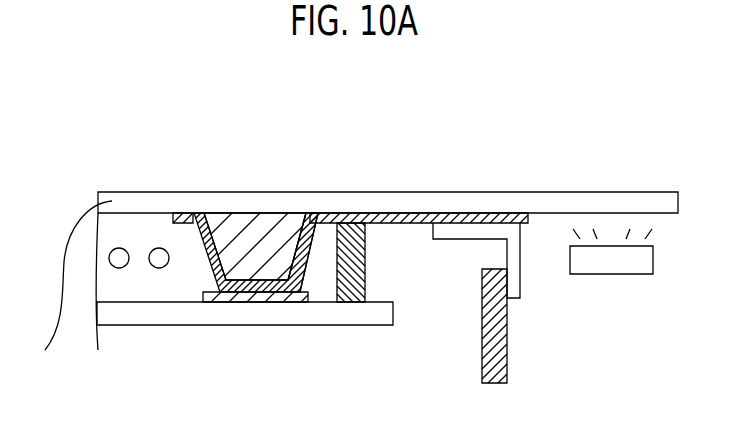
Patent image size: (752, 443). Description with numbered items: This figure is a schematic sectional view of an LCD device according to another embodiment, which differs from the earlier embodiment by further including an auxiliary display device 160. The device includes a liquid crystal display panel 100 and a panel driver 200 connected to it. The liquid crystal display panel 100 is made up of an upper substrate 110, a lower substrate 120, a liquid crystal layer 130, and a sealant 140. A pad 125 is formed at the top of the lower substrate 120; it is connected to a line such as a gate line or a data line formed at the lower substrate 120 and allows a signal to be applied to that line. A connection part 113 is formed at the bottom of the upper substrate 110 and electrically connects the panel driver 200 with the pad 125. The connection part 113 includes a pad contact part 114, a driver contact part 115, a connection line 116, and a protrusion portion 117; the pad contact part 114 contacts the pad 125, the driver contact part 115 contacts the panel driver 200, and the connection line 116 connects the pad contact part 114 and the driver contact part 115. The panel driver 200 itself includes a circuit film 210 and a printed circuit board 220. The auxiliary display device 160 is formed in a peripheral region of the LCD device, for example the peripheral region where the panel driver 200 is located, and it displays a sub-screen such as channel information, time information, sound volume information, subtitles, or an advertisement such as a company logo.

The liquid crystal display panel 100 is at (350, 277).
The upper substrate 110 is at (45, 350).
The connection part 113 is at (350, 198).
The pad contact part 114 is at (200, 218).
The driver contact part 115 is at (198, 139).
The connection line 116 is at (328, 218).
The protrusion portion 117 is at (252, 228).
The lower substrate 120 is at (253, 325).
The pad 125 is at (217, 290).
The liquid crystal layer 130 is at (119, 258).
The sealant 140 is at (379, 301).
The auxiliary display device 160 is at (650, 259).
The panel driver 200 is at (529, 303).
The circuit film 210 is at (520, 289).
The printed circuit board 220 is at (507, 330).